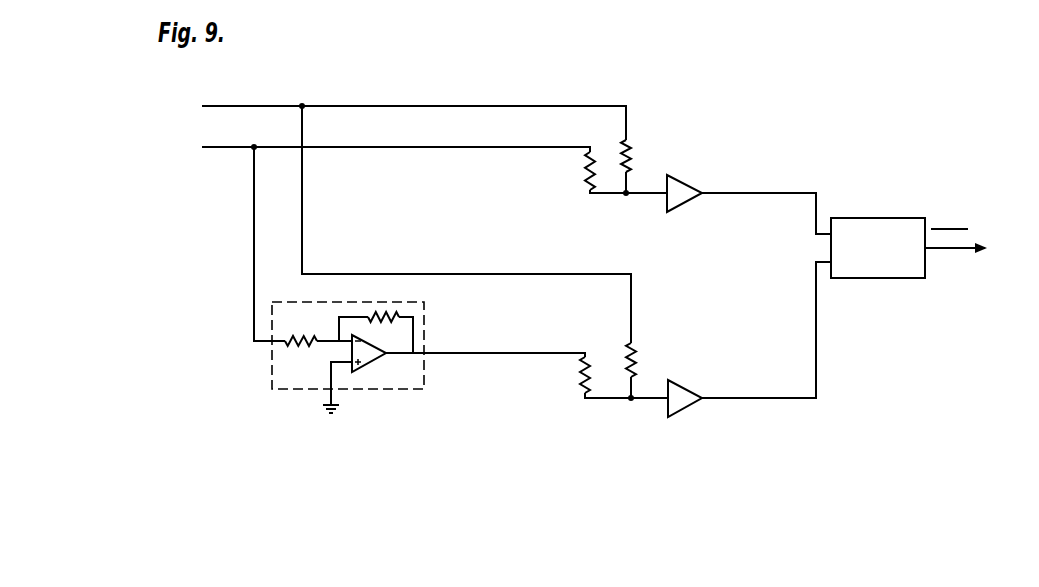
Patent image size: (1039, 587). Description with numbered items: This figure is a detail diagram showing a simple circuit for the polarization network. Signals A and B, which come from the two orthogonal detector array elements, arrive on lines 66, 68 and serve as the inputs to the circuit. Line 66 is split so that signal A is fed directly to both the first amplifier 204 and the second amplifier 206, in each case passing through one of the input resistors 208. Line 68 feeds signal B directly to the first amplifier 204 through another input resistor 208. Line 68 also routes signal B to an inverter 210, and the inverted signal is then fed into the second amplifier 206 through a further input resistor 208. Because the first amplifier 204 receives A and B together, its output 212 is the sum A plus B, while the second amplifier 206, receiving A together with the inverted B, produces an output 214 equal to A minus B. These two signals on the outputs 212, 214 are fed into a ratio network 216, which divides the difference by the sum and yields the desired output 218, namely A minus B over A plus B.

The line 66 is at (185, 105).
The line 68 is at (185, 155).
The first amplifier 204 is at (687, 176).
The second amplifier 206 is at (687, 384).
The input resistors 208 is at (630, 143).
The inverter 210 is at (425, 315).
The output of the first amplifier 212 is at (785, 190).
The output of the second amplifier 214 is at (803, 403).
The ratio network 216 is at (870, 217).
The output 218 is at (985, 242).